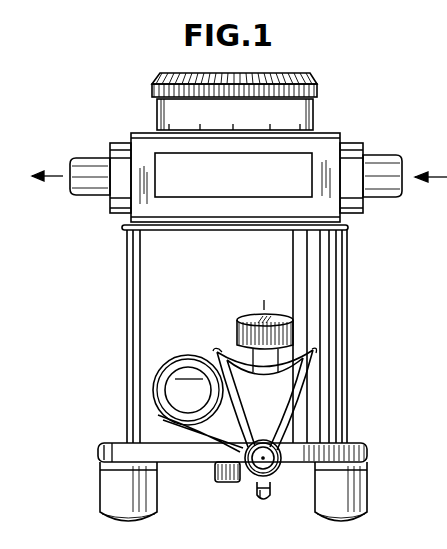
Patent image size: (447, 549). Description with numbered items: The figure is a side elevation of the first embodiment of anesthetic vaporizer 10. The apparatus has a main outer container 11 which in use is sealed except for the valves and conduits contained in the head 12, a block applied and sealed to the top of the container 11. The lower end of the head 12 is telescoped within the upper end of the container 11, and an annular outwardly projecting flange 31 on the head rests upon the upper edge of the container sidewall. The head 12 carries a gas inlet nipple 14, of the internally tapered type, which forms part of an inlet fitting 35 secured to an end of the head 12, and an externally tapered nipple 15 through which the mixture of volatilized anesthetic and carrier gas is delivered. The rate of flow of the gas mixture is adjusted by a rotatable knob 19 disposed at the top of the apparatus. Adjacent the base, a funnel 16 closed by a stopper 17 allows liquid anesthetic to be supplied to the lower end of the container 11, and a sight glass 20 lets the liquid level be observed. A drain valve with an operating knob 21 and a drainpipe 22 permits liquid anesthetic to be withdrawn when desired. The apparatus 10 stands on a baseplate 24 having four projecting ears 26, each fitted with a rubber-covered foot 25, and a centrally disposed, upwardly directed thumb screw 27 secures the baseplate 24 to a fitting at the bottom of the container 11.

The anesthetic vaporizer 10 is at (338, 93).
The main outer container 11 is at (327, 285).
The head 12 is at (332, 217).
The gas inlet nipple 14 is at (382, 167).
The nipple 15 is at (83, 163).
The funnel 16 is at (279, 464).
The stopper 17 is at (257, 320).
The rotatable knob 19 is at (313, 80).
The sight glass 20 is at (178, 390).
The operating knob 21 is at (271, 483).
The drainpipe 22 is at (268, 500).
The baseplate 24 is at (175, 453).
The rubber-covered foot 25 is at (113, 483).
The projecting ear 26 is at (113, 442).
The thumb screw 27 is at (218, 478).
The annular outwardly projecting flange 31 is at (323, 238).
The inlet fitting 35 is at (352, 144).